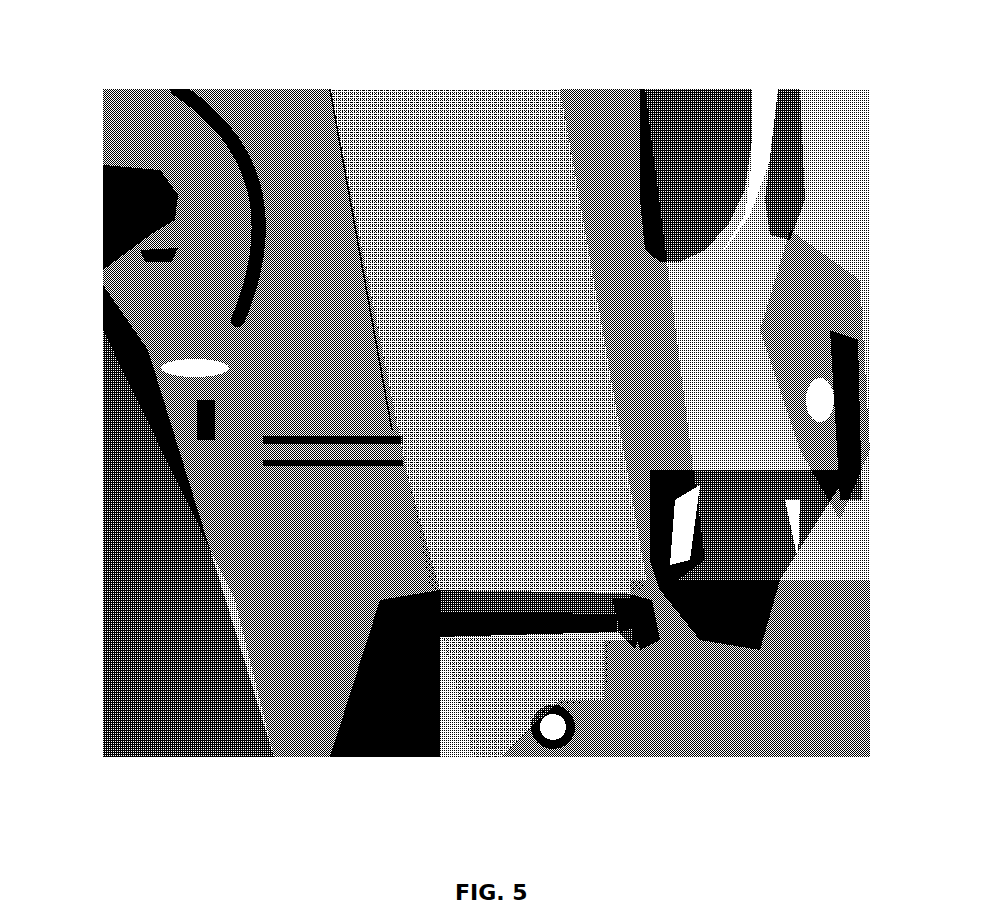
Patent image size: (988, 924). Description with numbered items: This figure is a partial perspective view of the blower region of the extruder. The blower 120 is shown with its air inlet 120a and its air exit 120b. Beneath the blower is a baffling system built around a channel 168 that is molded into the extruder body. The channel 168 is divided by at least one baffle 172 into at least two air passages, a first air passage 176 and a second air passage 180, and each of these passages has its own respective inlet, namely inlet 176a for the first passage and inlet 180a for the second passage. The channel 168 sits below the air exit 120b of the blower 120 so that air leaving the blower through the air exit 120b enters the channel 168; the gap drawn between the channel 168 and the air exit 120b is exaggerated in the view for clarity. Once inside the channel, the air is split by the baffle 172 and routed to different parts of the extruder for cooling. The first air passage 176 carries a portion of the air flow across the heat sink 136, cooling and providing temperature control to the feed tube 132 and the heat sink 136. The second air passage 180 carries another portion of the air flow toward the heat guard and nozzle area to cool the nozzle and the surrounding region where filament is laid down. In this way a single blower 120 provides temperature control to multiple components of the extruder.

The blower 120 is at (494, 270).
The air inlet 120a is at (727, 265).
The air exit 120b is at (508, 593).
The feed tube 132 is at (225, 472).
The heat sink 136 is at (325, 580).
The channel 168 is at (682, 537).
The baffle 172 is at (621, 615).
The first air passage 176 is at (547, 613).
The inlet of first air passage 176a is at (531, 710).
The second air passage 180 is at (627, 612).
The inlet of second air passage 180a is at (710, 731).